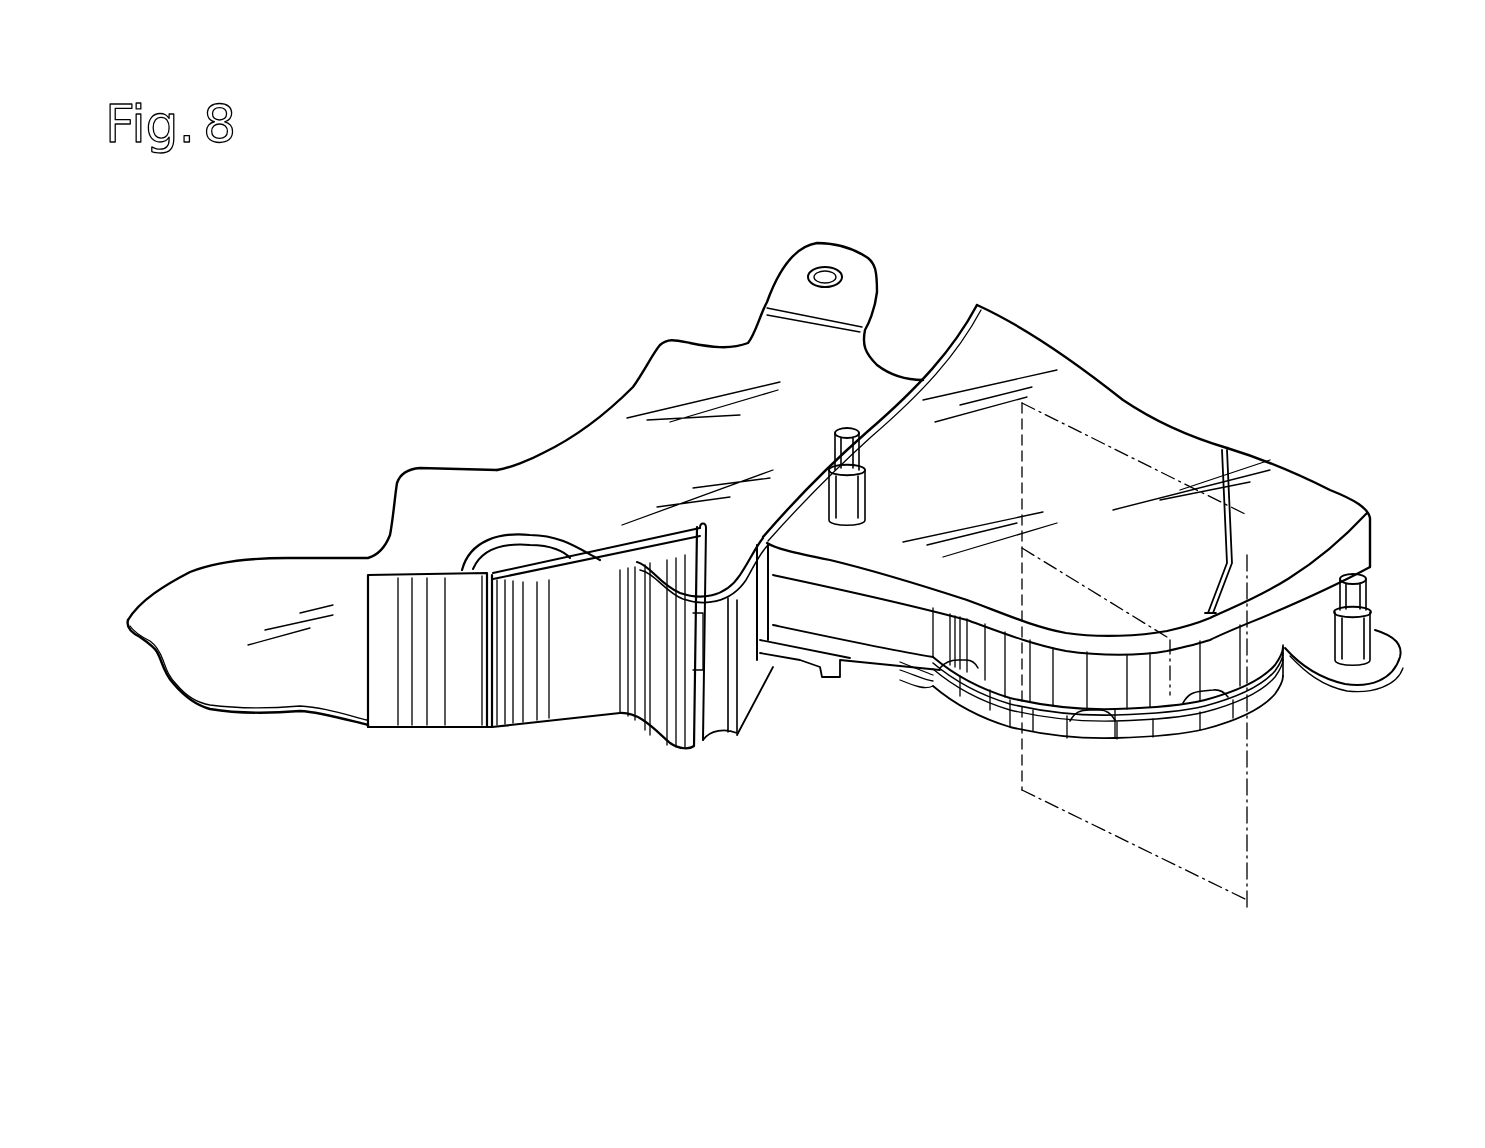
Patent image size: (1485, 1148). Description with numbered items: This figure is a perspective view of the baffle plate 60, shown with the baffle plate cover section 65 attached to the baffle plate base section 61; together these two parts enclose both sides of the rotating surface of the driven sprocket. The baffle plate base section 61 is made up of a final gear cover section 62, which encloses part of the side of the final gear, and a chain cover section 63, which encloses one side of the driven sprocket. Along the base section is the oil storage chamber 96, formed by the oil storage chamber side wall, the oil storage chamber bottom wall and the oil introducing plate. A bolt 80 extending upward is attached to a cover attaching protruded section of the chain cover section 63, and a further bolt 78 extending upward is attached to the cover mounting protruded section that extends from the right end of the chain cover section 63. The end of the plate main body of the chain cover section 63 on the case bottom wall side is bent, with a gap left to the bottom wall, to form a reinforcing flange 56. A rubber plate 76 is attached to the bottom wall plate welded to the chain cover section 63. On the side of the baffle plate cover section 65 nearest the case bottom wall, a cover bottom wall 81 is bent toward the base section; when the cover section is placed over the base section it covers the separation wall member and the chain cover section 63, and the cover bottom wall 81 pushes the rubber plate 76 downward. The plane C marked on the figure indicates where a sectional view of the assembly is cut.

The baffle plate 60 is at (1043, 307).
The baffle plate base section 61 is at (655, 345).
The final gear cover section 62 is at (513, 482).
The baffle plate cover section 65 is at (1163, 448).
The bolt 80 is at (863, 482).
The bolt 78 is at (1360, 637).
The oil storage chamber 96 is at (650, 687).
The cover bottom wall 81 is at (873, 630).
The rubber plate 76 is at (943, 700).
The reinforcing flange 56 is at (967, 673).
The chain cover section 63 is at (1072, 742).
The plane C is at (1250, 762).